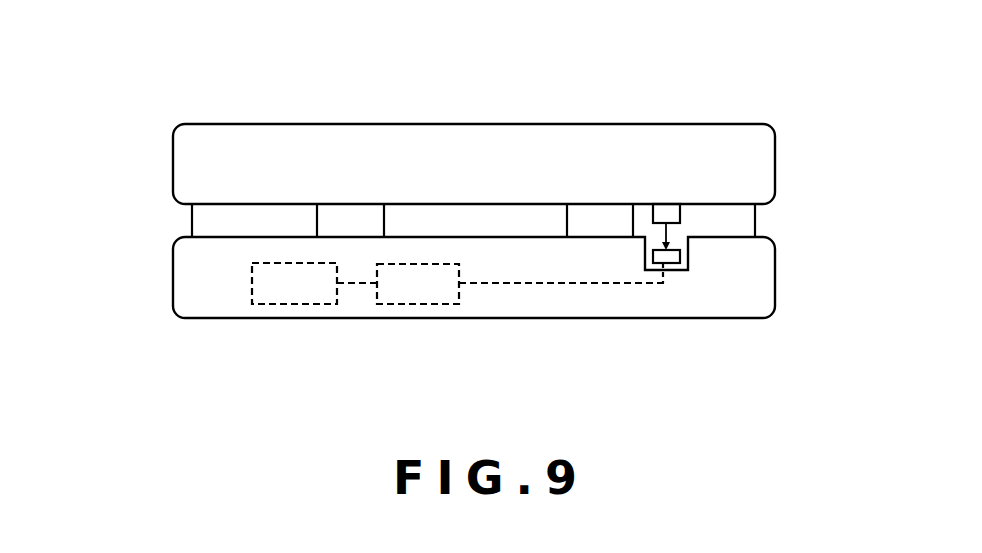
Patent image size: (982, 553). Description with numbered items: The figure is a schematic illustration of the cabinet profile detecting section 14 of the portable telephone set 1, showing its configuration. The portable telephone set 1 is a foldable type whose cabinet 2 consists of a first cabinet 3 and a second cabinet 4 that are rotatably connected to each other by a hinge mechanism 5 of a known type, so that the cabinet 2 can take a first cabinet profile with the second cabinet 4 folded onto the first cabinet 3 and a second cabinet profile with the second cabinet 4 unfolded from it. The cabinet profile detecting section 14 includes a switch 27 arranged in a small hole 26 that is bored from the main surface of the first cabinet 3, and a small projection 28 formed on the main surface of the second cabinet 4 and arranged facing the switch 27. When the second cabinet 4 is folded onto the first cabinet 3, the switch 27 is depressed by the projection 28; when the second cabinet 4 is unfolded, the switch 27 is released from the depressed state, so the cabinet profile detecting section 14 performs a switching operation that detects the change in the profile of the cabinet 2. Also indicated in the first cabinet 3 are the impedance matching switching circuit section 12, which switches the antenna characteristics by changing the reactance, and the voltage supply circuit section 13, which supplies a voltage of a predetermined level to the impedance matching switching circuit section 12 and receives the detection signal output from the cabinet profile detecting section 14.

The portable telephone set 1 is at (423, 44).
The cabinet 2 is at (85, 140).
The first cabinet 3 is at (198, 278).
The second cabinet 4 is at (198, 160).
The hinge mechanism 5 is at (740, 220).
The impedance matching switching circuit section 12 is at (300, 305).
The voltage supply circuit section 13 is at (418, 305).
The cabinet profile detecting section 14 is at (696, 226).
The small hole 26 is at (652, 272).
The switch 27 is at (673, 264).
The small projection 28 is at (661, 210).